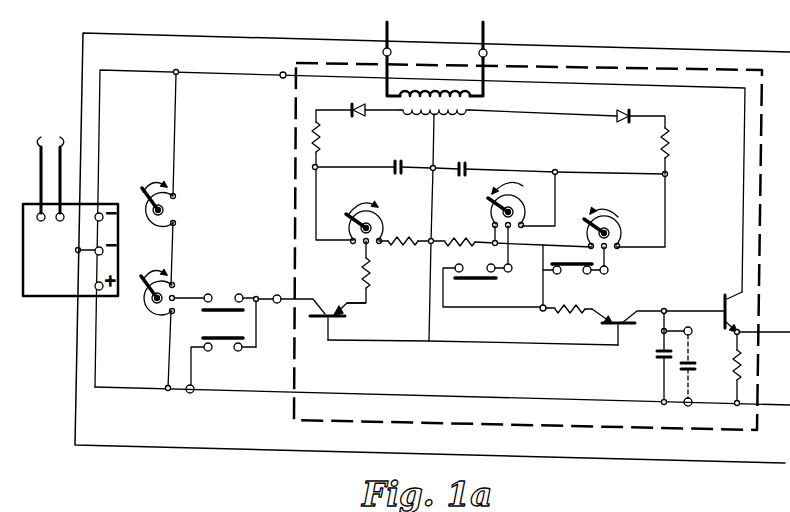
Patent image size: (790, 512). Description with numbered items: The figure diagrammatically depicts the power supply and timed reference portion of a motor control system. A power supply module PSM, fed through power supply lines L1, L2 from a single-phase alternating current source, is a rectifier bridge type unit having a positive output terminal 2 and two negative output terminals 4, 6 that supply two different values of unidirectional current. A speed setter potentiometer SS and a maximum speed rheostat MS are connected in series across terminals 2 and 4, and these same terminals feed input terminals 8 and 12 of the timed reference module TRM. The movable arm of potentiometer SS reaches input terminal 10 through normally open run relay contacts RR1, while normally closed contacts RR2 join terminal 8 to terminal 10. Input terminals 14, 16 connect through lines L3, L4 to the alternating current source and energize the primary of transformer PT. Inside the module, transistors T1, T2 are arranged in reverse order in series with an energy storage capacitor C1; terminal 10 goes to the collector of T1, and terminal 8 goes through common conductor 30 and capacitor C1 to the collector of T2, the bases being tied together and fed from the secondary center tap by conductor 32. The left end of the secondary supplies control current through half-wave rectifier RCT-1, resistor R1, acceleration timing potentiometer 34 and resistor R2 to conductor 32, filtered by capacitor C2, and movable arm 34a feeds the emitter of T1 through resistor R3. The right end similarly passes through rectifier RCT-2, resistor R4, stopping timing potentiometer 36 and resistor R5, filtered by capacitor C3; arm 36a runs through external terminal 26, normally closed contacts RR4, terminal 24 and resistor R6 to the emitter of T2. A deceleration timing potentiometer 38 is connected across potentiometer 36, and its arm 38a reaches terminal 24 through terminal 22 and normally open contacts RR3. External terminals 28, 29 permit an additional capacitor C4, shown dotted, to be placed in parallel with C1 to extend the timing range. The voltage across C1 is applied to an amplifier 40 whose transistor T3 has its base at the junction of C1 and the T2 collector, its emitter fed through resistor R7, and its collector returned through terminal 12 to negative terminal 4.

The positive output terminal 2 is at (96, 288).
The negative output terminal 4 is at (99, 222).
The negative output terminal 6 is at (99, 256).
The external input terminal 8 is at (192, 393).
The external input terminal 10 is at (278, 304).
The external input terminal 12 is at (281, 72).
The external input terminal 14 is at (386, 46).
The external input terminal 16 is at (485, 46).
The external terminal 22 is at (512, 268).
The external terminal 24 is at (540, 311).
The external terminal 26 is at (608, 270).
The external terminal 28 is at (692, 331).
The external terminal 29 is at (686, 405).
The common conductor 30 is at (458, 395).
The conductor 32 is at (435, 147).
The acceleration timing potentiometer 34 is at (382, 216).
The movable arm 34a is at (346, 214).
The stopping timing potentiometer 36 is at (619, 231).
The movable arm 36a is at (586, 227).
The deceleration timing potentiometer 38 is at (525, 202).
The movable arm 38a is at (488, 209).
The amplifier 40 is at (741, 333).
The power supply module PSM is at (64, 300).
The timed reference module TRM is at (296, 118).
The maximum speed rheostat MS is at (175, 208).
The speed setter potentiometer SS is at (175, 292).
The normally open contacts RR1 is at (230, 275).
The normally closed contacts RR2 is at (228, 348).
The normally open contacts RR3 is at (466, 282).
The normally closed contacts RR4 is at (572, 279).
The power supply line L1 is at (34, 165).
The power supply line L2 is at (61, 165).
The power supply line L3 is at (404, 55).
The power supply line L4 is at (465, 55).
The transformer PT is at (486, 104).
The half-wave rectifier RCT-1 is at (356, 105).
The half-wave rectifier RCT-2 is at (618, 110).
The transistor T1 is at (318, 313).
The transistor T2 is at (628, 318).
The transistor T3 is at (732, 310).
The resistor R1 is at (322, 137).
The resistor R2 is at (410, 229).
The resistor R3 is at (370, 276).
The resistor R4 is at (660, 142).
The resistor R5 is at (461, 237).
The resistor R6 is at (573, 313).
The resistor R7 is at (735, 365).
The capacitor C1 is at (657, 354).
The filter capacitor C2 is at (398, 160).
The filter capacitor C3 is at (466, 160).
The additional capacitor C4 is at (691, 368).